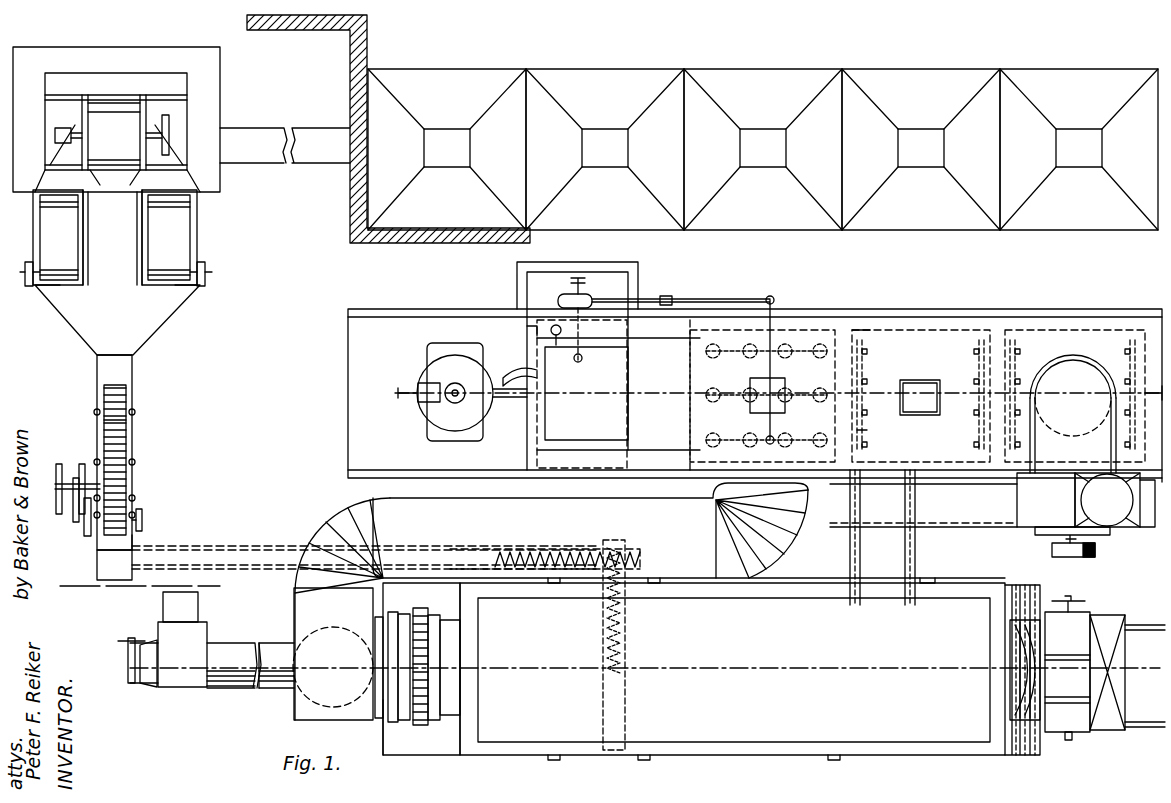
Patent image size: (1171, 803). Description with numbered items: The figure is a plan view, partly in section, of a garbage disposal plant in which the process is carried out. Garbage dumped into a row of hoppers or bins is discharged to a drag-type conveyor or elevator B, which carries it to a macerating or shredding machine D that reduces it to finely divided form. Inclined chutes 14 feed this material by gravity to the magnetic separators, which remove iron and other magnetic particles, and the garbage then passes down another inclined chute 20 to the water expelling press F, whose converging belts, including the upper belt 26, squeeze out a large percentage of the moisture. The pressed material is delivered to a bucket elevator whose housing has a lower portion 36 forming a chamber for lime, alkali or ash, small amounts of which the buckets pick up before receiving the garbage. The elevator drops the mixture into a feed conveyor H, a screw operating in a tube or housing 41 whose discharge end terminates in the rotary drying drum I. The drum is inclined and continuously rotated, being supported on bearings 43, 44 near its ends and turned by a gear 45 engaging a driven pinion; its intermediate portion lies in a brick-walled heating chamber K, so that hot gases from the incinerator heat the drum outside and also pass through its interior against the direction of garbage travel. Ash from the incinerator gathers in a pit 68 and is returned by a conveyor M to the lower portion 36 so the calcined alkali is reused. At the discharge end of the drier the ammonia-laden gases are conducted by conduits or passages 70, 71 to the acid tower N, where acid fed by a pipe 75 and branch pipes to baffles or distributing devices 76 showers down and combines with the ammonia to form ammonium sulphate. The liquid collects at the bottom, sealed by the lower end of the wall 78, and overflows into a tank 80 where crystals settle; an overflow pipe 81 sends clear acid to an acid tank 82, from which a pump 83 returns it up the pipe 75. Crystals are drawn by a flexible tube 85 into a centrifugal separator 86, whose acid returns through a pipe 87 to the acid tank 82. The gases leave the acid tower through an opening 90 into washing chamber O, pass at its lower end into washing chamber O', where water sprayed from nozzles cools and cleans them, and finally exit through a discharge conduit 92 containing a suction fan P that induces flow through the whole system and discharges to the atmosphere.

The macerating or shredding machine D is at (118, 110).
The conveyor or elevator B is at (262, 128).
The inclined chutes 14 is at (96, 185).
The inclined chute 20 is at (117, 320).
The upper belt 26 is at (118, 434).
The water expelling device or press F is at (128, 486).
The lower portion of housing 36 is at (133, 542).
The feed conveyor H is at (226, 652).
The tube or housing 41 is at (215, 688).
The conduit or passage 70 is at (333, 654).
The gear 45 is at (421, 613).
The bearing 43 is at (386, 752).
The rotary drying kiln or drum I is at (462, 660).
The heating chamber K is at (537, 705).
The pit 68 is at (626, 692).
The conveyor M is at (520, 552).
The conduit or passage 71 is at (577, 543).
The bearing 44 is at (1025, 663).
The pump 83 is at (592, 297).
The acid tank 82 is at (528, 326).
The overflow pipe 81 is at (552, 327).
The pipe or flexible tube 85 is at (516, 370).
The separator 86 is at (438, 412).
The pipe 87 is at (513, 405).
The tank 80 is at (618, 394).
The wall 78 is at (690, 378).
The pipe 75 is at (730, 300).
The baffle or distributing device 76 is at (710, 357).
The acid tower N is at (802, 336).
The opening 90 is at (855, 336).
The washing chamber O is at (921, 396).
The washing chamber O' is at (1075, 396).
The discharge conduit 92 is at (1073, 414).
The suction fan P is at (996, 515).